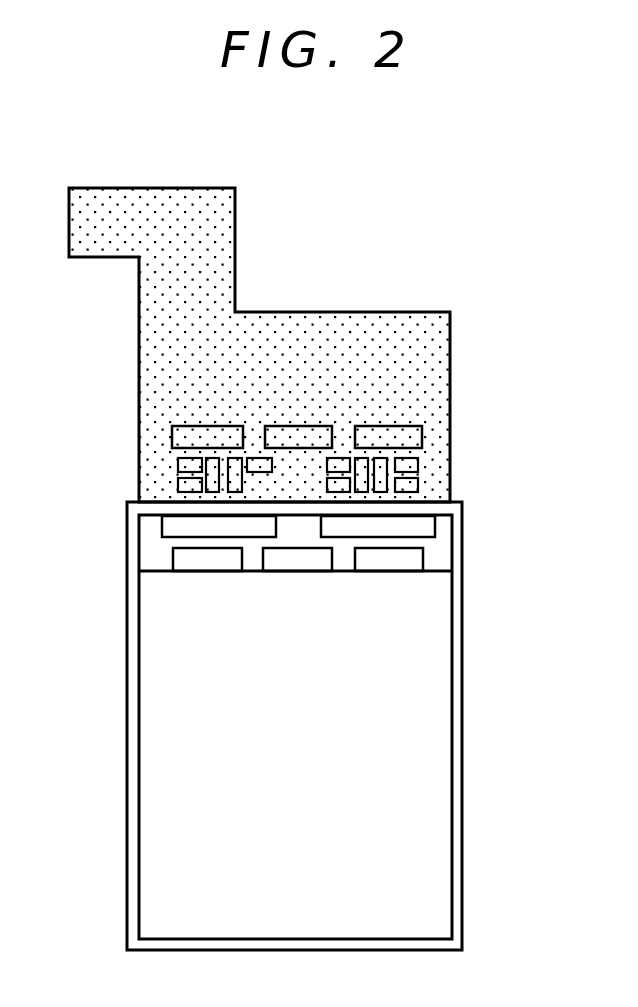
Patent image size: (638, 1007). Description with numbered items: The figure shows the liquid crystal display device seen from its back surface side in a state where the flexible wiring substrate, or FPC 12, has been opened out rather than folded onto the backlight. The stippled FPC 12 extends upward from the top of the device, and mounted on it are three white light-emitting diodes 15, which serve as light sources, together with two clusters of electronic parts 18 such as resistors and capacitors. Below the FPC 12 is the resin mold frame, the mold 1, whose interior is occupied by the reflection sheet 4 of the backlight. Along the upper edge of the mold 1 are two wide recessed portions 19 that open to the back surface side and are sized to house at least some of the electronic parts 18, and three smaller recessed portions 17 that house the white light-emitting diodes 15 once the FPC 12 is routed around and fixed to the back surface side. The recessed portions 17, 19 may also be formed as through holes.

The mold 1 is at (463, 690).
The reflection sheet 4 is at (430, 780).
The flexible wiring substrate 12 is at (350, 318).
The white light-emitting diodes 15 is at (415, 437).
The electronic parts 18 is at (178, 462).
The recessed portions 19 is at (173, 527).
The recessed portions 17 is at (420, 562).